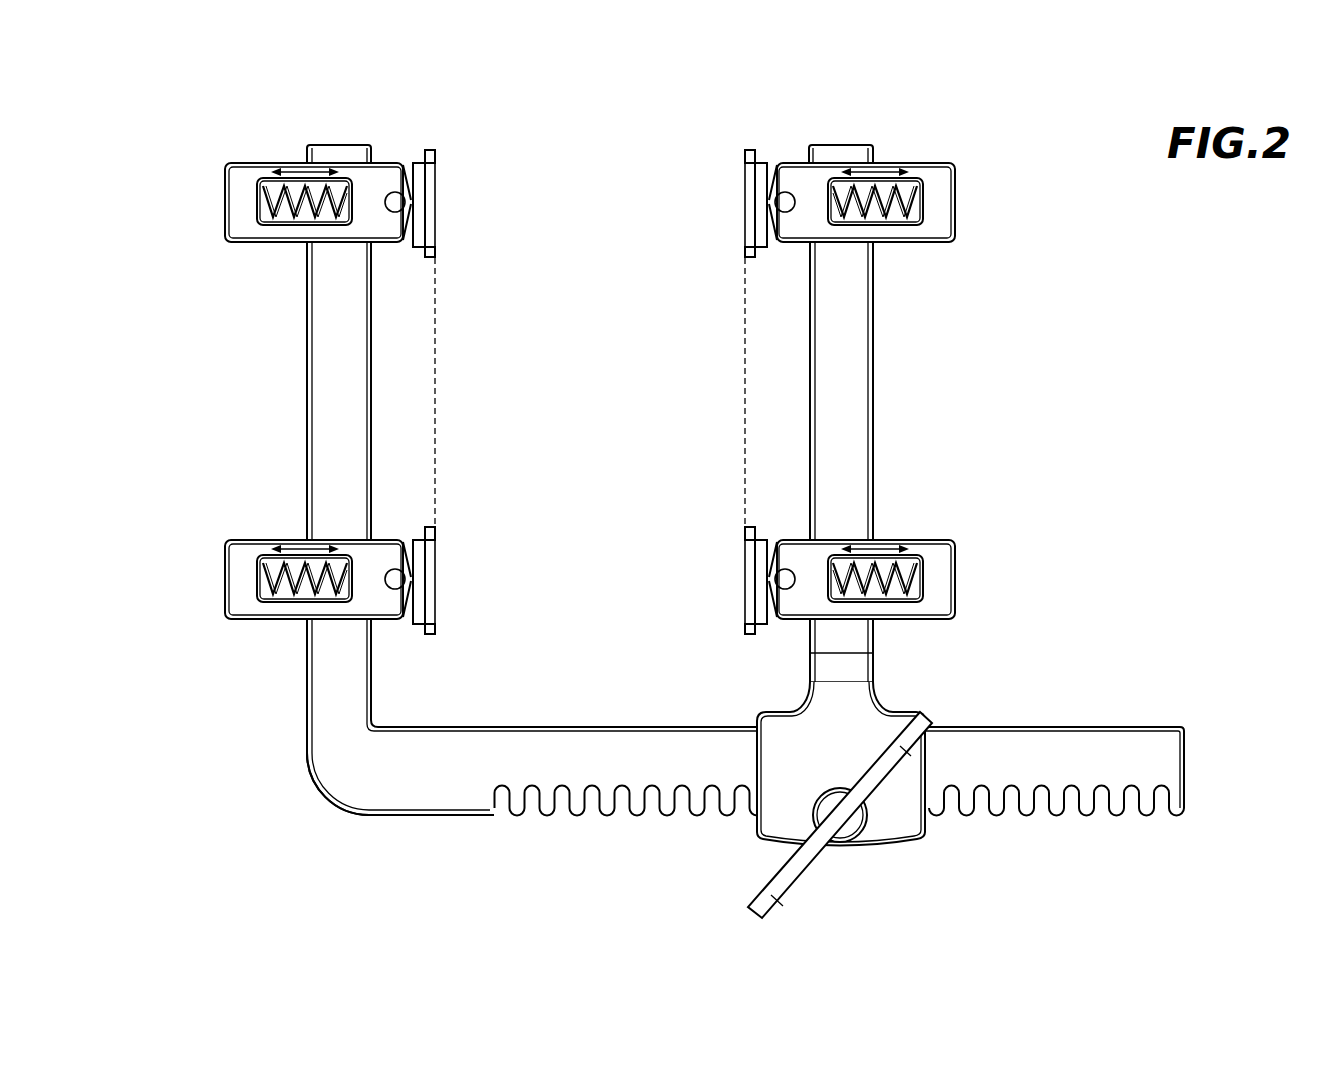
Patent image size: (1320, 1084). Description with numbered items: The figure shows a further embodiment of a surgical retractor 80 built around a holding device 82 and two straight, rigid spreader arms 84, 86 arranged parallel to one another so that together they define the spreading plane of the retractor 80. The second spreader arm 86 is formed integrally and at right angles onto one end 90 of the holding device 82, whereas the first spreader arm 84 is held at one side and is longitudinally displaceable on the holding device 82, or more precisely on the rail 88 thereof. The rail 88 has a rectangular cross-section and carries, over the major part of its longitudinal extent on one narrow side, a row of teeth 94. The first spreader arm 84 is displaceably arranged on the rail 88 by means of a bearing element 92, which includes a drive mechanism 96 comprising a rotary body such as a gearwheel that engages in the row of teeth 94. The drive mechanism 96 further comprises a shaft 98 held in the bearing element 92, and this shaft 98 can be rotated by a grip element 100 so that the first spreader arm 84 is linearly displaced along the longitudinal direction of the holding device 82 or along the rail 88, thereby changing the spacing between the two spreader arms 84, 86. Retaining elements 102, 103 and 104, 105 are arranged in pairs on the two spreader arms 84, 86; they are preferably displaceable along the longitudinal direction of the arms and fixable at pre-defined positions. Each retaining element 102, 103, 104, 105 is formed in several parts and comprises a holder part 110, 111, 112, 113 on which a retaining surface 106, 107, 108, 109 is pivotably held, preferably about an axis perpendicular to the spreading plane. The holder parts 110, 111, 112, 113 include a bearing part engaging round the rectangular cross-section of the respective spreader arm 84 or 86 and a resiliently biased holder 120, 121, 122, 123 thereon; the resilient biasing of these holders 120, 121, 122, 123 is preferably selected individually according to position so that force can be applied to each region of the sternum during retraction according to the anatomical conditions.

The retractor 80 is at (1040, 333).
The holding device 82 is at (706, 828).
The first spreader arm 84 is at (876, 378).
The second spreader arm 86 is at (304, 372).
The rail 88 is at (1114, 723).
The end of the holding device 90 is at (324, 809).
The bearing element 92 is at (786, 687).
The row of teeth 94 is at (1100, 817).
The drive mechanism 96 is at (883, 821).
The shaft 98 is at (846, 836).
The grip element 100 is at (792, 872).
The retaining element 102 is at (966, 183).
The retaining element 103 is at (966, 562).
The retaining element 104 is at (222, 207).
The retaining element 105 is at (222, 584).
The retaining surface 106 is at (741, 206).
The retaining surface 107 is at (741, 583).
The retaining surface 108 is at (441, 203).
The retaining surface 109 is at (441, 580).
The holder part 110 is at (868, 173).
The holder part 111 is at (868, 552).
The holder part 112 is at (322, 194).
The holder part 113 is at (322, 569).
The resiliently biased holder 120 is at (946, 222).
The resiliently biased holder 121 is at (946, 600).
The resiliently biased holder 122 is at (244, 226).
The resiliently biased holder 123 is at (247, 603).